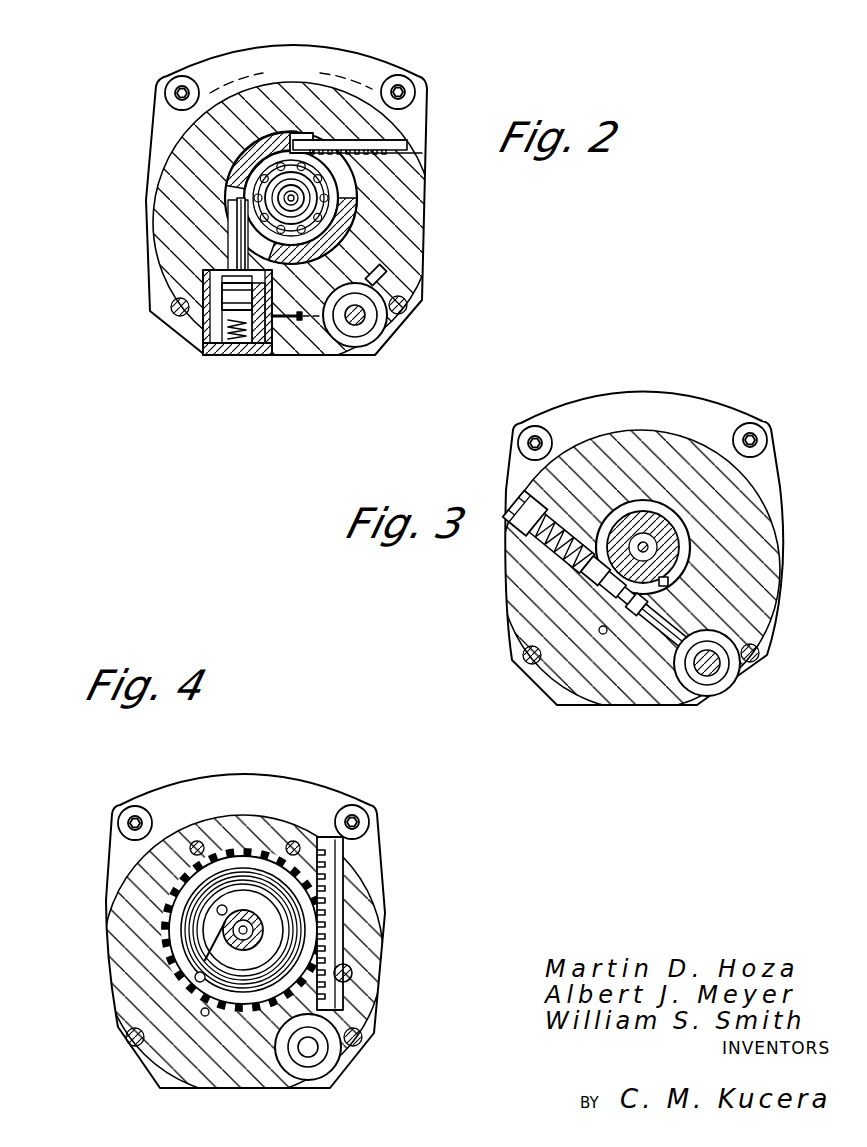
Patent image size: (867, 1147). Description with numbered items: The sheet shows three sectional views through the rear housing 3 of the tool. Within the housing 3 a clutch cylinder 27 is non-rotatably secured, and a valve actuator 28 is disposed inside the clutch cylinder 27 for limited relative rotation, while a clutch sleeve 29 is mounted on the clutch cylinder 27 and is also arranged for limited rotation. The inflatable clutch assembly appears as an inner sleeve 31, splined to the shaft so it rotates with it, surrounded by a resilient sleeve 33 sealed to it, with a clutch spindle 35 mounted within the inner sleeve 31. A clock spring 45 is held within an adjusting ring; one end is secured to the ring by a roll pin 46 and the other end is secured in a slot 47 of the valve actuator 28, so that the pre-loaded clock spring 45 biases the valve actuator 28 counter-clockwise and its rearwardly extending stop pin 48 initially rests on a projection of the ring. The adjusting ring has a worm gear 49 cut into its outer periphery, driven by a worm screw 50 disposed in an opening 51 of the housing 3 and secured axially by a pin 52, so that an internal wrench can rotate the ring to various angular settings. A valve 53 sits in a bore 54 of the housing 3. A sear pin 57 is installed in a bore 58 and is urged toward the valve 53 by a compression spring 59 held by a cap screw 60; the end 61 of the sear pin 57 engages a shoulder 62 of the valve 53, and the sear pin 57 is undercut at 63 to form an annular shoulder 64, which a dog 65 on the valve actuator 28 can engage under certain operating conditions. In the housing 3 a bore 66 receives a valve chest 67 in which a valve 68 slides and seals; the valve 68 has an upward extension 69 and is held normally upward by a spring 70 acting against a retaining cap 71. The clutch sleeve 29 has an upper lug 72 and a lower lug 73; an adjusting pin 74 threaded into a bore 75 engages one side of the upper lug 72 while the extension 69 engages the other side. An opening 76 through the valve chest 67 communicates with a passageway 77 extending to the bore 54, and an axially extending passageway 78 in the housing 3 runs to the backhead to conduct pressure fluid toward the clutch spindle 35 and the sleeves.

In FIG. 2, the rear housing 3 is at (363, 52).
In FIG. 3, the rear housing 3 is at (677, 393).
In FIG. 4, the rear housing 3 is at (385, 895).
In FIG. 2, the clutch cylinder 27 is at (352, 160).
In FIG. 3, the valve actuator 28 is at (652, 528).
In FIG. 4, the valve actuator 28 is at (241, 900).
In FIG. 2, the clutch sleeve 29 is at (398, 166).
In FIG. 2, the inner sleeve 31 is at (262, 175).
In FIG. 2, the resilient sleeve 33 is at (250, 176).
In FIG. 2, the clutch spindle 35 is at (345, 194).
In FIG. 3, the clutch spindle 35 is at (640, 535).
In FIG. 4, the clutch spindle 35 is at (225, 934).
In FIG. 4, the clock spring 45 is at (240, 992).
In FIG. 4, the roll pin 46 is at (200, 972).
In FIG. 4, the slot 47 is at (212, 950).
In FIG. 4, the stop pin 48 is at (218, 912).
In FIG. 4, the worm gear 49 is at (226, 848).
In FIG. 4, the worm screw 50 is at (340, 870).
In FIG. 4, the opening 51 is at (319, 838).
In FIG. 4, the pin 52 is at (353, 973).
In FIG. 2, the valve 53 is at (388, 318).
In FIG. 3, the valve 53 is at (760, 650).
In FIG. 4, the valve 53 is at (340, 1066).
In FIG. 2, the bore 54 is at (380, 341).
In FIG. 3, the sear pin 57 is at (680, 622).
In FIG. 3, the bore 58 is at (598, 568).
In FIG. 3, the compression spring 59 is at (565, 532).
In FIG. 3, the cap screw 60 is at (522, 497).
In FIG. 3, the end 61 is at (700, 648).
In FIG. 3, the shoulder 62 is at (690, 690).
In FIG. 3, the undercut 63 is at (622, 602).
In FIG. 3, the annular shoulder 64 is at (606, 585).
In FIG. 3, the dog 65 is at (668, 582).
In FIG. 2, the bore 66 is at (205, 317).
In FIG. 2, the valve chest 67 is at (256, 325).
In FIG. 2, the valve 68 is at (235, 296).
In FIG. 2, the extension 69 is at (238, 215).
In FIG. 2, the spring 70 is at (236, 330).
In FIG. 2, the retaining cap 71 is at (212, 350).
In FIG. 2, the upper lug 72 is at (246, 189).
In FIG. 2, the lower lug 73 is at (385, 270).
In FIG. 2, the adjusting pin 74 is at (395, 138).
In FIG. 2, the bore 75 is at (400, 150).
In FIG. 2, the opening 76 is at (283, 313).
In FIG. 2, the passageway 77 is at (300, 322).
In FIG. 2, the axially extending passageway 78 is at (215, 250).
In FIG. 3, the axially extending passageway 78 is at (603, 636).
In FIG. 4, the axially extending passageway 78 is at (200, 1012).